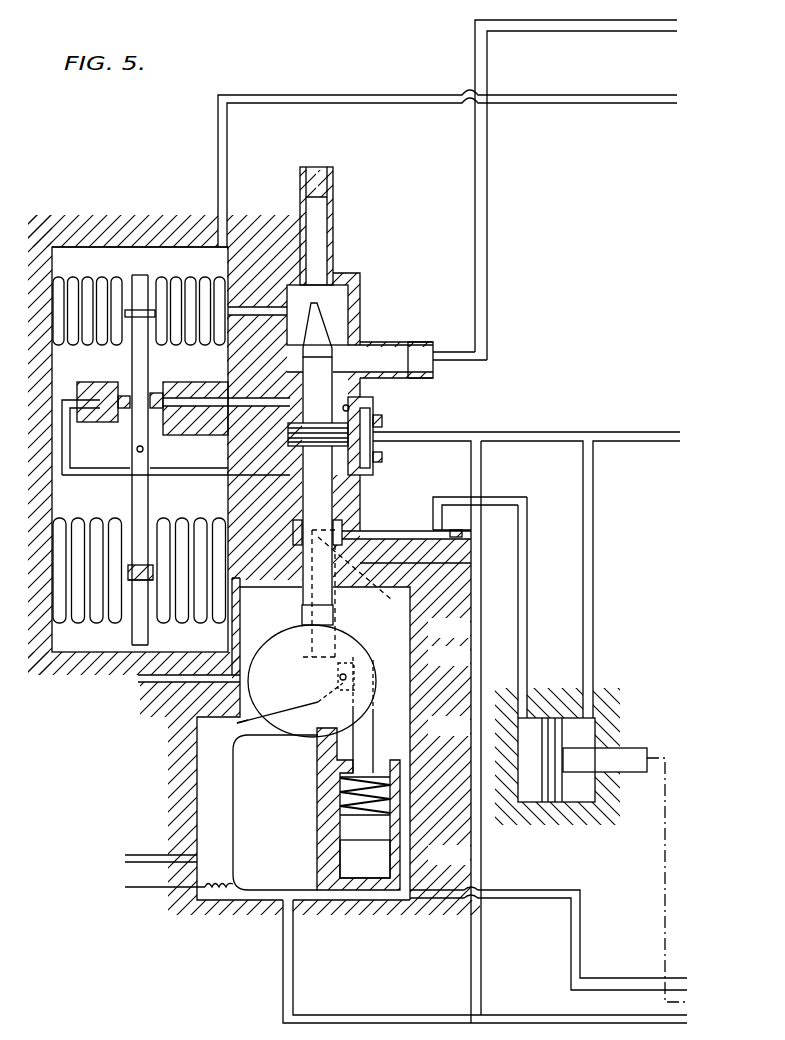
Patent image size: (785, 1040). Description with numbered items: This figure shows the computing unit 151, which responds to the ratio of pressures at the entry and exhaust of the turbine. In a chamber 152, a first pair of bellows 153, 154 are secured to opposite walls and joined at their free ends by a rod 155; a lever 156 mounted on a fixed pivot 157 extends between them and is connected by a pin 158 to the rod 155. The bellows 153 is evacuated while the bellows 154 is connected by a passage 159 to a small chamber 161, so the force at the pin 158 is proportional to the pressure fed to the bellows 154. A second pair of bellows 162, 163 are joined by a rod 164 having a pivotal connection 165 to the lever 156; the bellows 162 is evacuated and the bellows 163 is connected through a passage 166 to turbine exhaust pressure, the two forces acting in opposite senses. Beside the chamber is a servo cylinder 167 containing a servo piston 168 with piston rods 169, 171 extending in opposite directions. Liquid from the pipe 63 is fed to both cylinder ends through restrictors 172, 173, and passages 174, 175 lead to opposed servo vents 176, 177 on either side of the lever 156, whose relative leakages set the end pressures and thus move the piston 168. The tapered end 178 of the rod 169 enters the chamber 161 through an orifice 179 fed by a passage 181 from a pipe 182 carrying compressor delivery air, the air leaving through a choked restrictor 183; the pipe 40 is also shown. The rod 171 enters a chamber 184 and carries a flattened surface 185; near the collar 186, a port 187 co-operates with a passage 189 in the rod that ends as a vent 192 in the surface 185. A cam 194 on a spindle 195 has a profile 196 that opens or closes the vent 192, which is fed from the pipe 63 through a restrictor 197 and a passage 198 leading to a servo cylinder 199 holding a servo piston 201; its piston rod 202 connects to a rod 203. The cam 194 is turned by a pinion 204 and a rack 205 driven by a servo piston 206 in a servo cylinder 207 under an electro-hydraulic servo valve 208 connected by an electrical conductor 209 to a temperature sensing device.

The fuel supply pipe 40 is at (627, 98).
The pipe 63 is at (555, 433).
The computing unit 151 is at (160, 225).
The chamber 152 is at (66, 255).
The bellows 153 is at (72, 335).
The bellows 154 is at (188, 286).
The rod 155 is at (128, 310).
The lever 156 is at (140, 350).
The fixed pivot 157 is at (137, 450).
The pin 158 is at (140, 311).
The passage 159 is at (264, 307).
The small chamber 161 is at (340, 297).
The bellows 162 is at (95, 522).
The bellows 163 is at (188, 522).
The rod 164 is at (130, 578).
The pivotal connection 165 is at (140, 582).
The passage 166 is at (240, 662).
The servo cylinder 167 is at (350, 406).
The servo piston 168 is at (352, 440).
The piston rod 169 is at (320, 371).
The piston rod 171 is at (322, 508).
The restrictor 172 is at (383, 458).
The restrictor 173 is at (383, 420).
The passage 174 is at (201, 398).
The passage 175 is at (217, 472).
The servo vent 176 is at (156, 392).
The servo vent 177 is at (120, 410).
The tapered end 178 is at (318, 306).
The orifice 179 is at (334, 340).
The passage 181 is at (411, 352).
The pipe 182 is at (482, 293).
The restrictor 183 is at (333, 182).
The chamber 184 is at (408, 632).
The flattened surface 185 is at (300, 618).
The collar 186 is at (345, 529).
The port 187 is at (356, 538).
The passage 189 is at (363, 577).
The vent 192 is at (310, 650).
The cam 194 is at (248, 718).
The spindle 195 is at (338, 678).
The cam profile 196 is at (378, 680).
The restrictor 197 is at (456, 538).
The passage 198 is at (511, 497).
The servo cylinder 199 is at (531, 802).
The servo piston 201 is at (566, 786).
The piston rod 202 is at (634, 760).
The rod 203 is at (664, 900).
The pinion 204 is at (290, 707).
The rack 205 is at (375, 740).
The servo piston 206 is at (356, 828).
The servo cylinder 207 is at (395, 870).
The electro-hydraulic servo valve 208 is at (262, 862).
The electrical conductor 209 is at (141, 892).